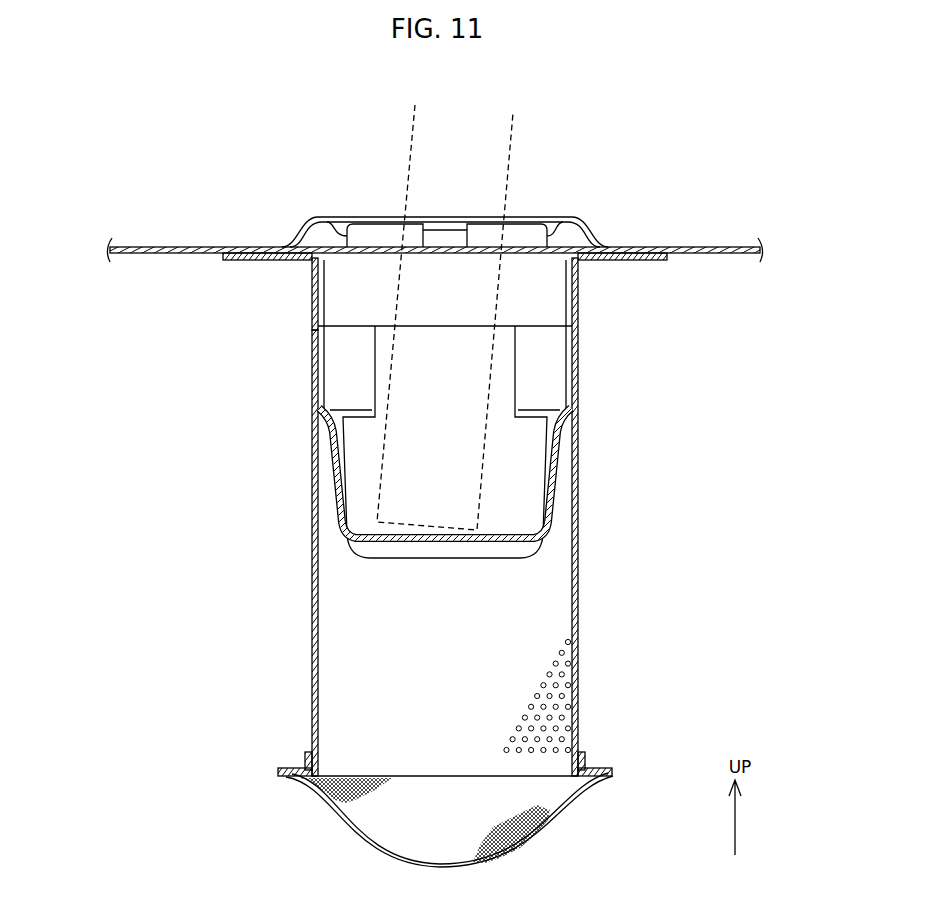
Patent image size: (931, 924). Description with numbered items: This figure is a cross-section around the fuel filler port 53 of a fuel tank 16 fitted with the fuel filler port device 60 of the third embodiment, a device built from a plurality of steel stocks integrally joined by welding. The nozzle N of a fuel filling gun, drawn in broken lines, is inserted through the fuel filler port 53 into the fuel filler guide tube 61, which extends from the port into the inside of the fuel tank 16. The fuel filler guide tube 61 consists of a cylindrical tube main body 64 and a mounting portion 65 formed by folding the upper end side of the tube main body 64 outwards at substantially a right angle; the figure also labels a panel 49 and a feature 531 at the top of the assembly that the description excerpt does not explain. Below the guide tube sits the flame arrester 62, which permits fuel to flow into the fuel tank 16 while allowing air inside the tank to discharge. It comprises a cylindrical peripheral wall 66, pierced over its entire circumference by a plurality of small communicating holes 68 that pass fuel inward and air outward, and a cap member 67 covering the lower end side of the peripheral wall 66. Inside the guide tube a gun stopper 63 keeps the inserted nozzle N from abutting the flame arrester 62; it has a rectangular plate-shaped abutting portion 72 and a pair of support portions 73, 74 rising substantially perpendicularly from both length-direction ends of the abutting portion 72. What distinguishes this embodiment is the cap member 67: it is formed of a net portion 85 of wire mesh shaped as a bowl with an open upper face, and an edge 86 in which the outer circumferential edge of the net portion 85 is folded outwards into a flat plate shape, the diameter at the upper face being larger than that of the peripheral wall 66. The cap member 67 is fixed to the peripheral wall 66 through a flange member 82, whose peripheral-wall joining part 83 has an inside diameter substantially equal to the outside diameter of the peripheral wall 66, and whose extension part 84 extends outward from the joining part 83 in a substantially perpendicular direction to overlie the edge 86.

The nozzle N is at (517, 140).
The fuel tank 16 is at (676, 227).
The panel 49 is at (722, 247).
The fuel filler port 53 is at (578, 220).
The recess 531 is at (533, 222).
The fuel filler port device 60 is at (672, 582).
The fuel filler guide tube 61 is at (611, 264).
The flame arrester 62 is at (239, 786).
The gun stopper 63 is at (569, 510).
The tube main body 64 is at (318, 291).
The mounting portion 65 is at (233, 262).
The peripheral wall 66 is at (303, 683).
The cap member 67 is at (338, 832).
The communicating holes 68 is at (556, 688).
The abutting portion 72 is at (388, 553).
The support portion 73 is at (333, 480).
The support portion 74 is at (557, 480).
The flange member 82 is at (666, 718).
The peripheral-wall joining part 83 is at (585, 762).
The extension part 84 is at (613, 772).
The net portion 85 is at (408, 867).
The edge 86 is at (287, 778).